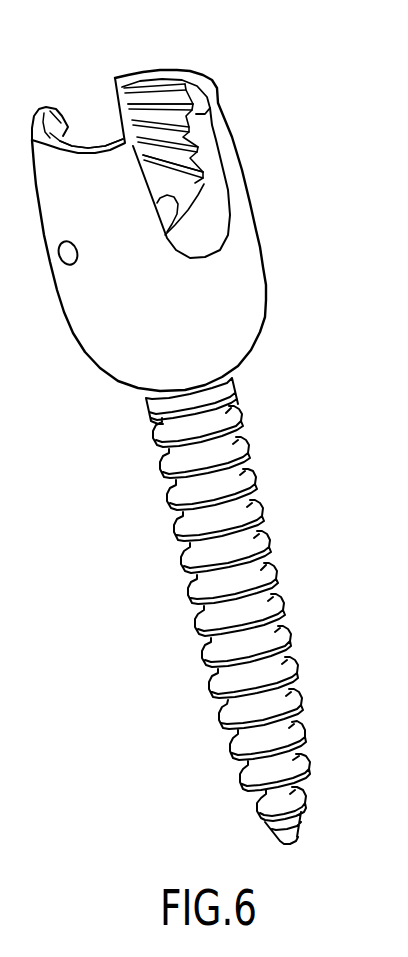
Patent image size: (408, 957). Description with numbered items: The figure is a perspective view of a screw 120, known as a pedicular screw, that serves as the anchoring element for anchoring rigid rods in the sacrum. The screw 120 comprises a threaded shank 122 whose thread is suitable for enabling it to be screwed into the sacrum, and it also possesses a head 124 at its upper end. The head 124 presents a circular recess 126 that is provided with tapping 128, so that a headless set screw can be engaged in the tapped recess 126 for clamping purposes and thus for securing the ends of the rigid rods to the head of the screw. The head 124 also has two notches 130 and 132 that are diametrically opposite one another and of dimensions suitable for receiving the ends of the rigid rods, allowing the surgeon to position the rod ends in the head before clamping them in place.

The screw 120 is at (199, 439).
The threaded shank 122 is at (215, 551).
The head 124 is at (176, 213).
The circular recess 126 is at (170, 93).
The tapping 128 is at (172, 130).
The notch 130 is at (206, 177).
The notch 132 is at (103, 127).